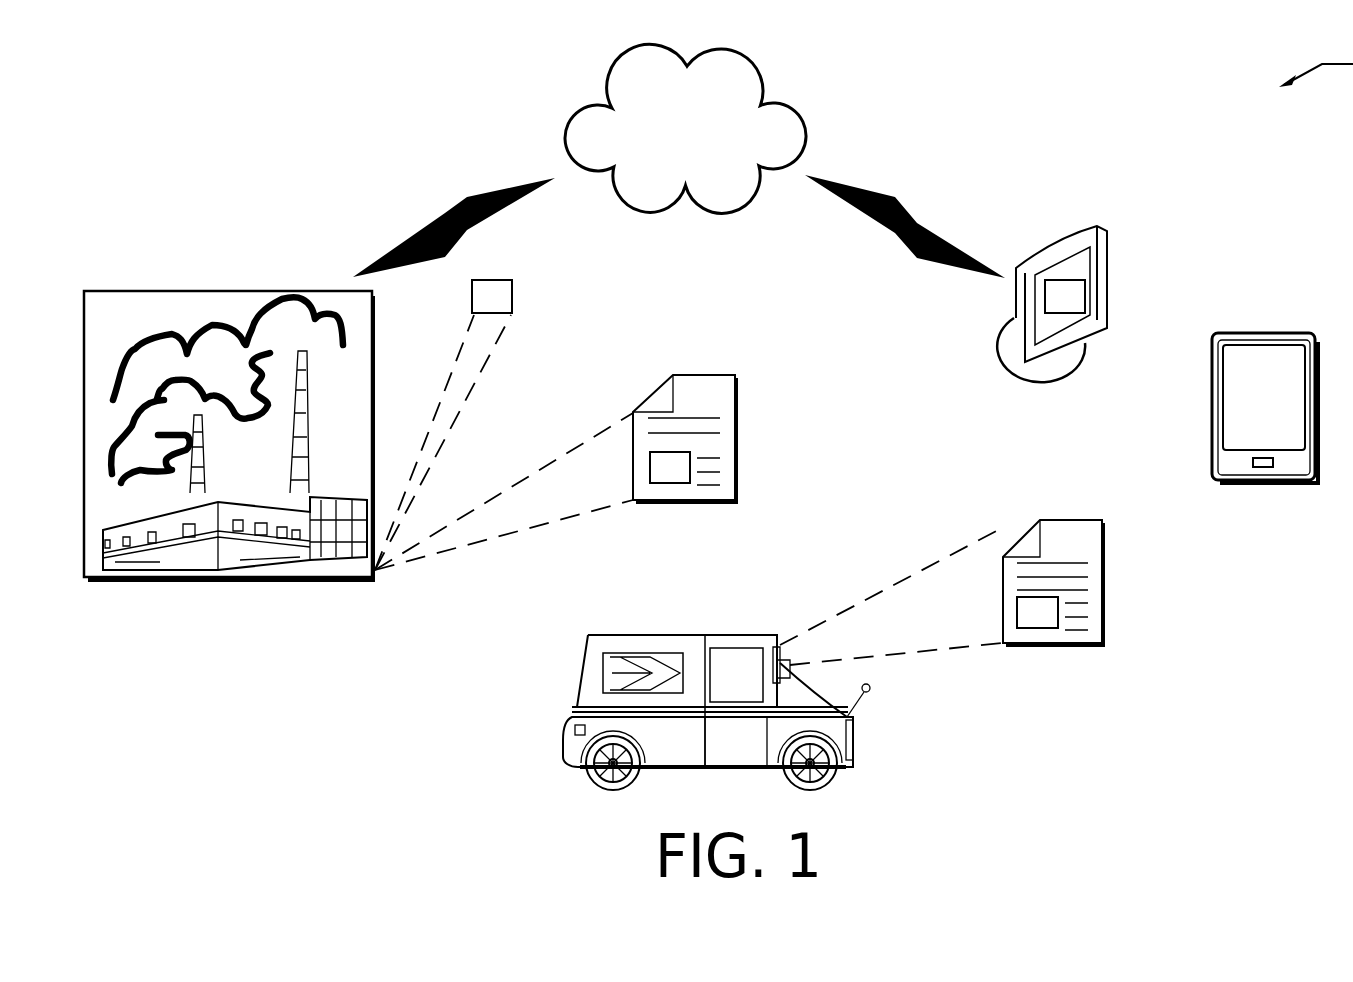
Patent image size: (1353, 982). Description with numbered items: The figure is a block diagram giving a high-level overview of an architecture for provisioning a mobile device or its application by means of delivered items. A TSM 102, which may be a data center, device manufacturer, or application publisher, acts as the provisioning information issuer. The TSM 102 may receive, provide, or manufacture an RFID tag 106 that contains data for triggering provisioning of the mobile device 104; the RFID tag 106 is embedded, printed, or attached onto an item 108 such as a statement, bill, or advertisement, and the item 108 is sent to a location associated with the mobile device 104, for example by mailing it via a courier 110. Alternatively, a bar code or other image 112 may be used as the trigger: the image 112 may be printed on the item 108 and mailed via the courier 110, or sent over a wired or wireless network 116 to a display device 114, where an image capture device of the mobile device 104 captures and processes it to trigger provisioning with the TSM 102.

The TSM 102 is at (227, 453).
The mobile device 104 is at (1265, 427).
The RFID tag 106 is at (668, 464).
The item 108 is at (869, 527).
The courier 110 is at (716, 716).
The image 112 is at (505, 296).
The display device 114 is at (1051, 323).
The network 116 is at (702, 163).